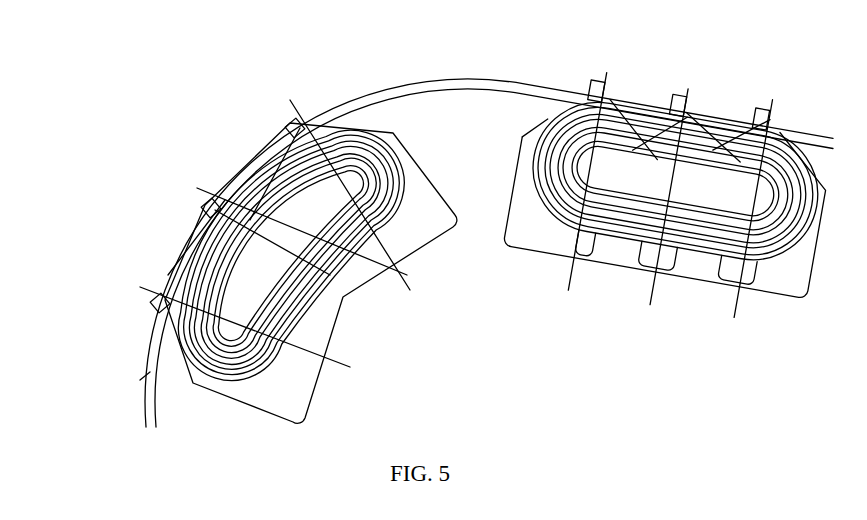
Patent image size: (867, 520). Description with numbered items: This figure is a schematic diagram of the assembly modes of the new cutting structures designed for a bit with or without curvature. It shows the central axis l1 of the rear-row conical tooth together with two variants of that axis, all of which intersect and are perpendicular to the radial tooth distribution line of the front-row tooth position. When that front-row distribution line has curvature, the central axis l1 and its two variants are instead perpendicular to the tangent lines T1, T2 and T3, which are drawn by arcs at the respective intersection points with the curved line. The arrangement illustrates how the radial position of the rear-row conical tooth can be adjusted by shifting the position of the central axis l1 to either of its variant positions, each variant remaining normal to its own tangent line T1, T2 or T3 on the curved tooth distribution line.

The tangent line T1 is at (168, 275).
The tangent line T2 is at (300, 125).
The tangent line T3 is at (140, 380).
The central axis of the rear-row conical tooth l1 is at (432, 164).